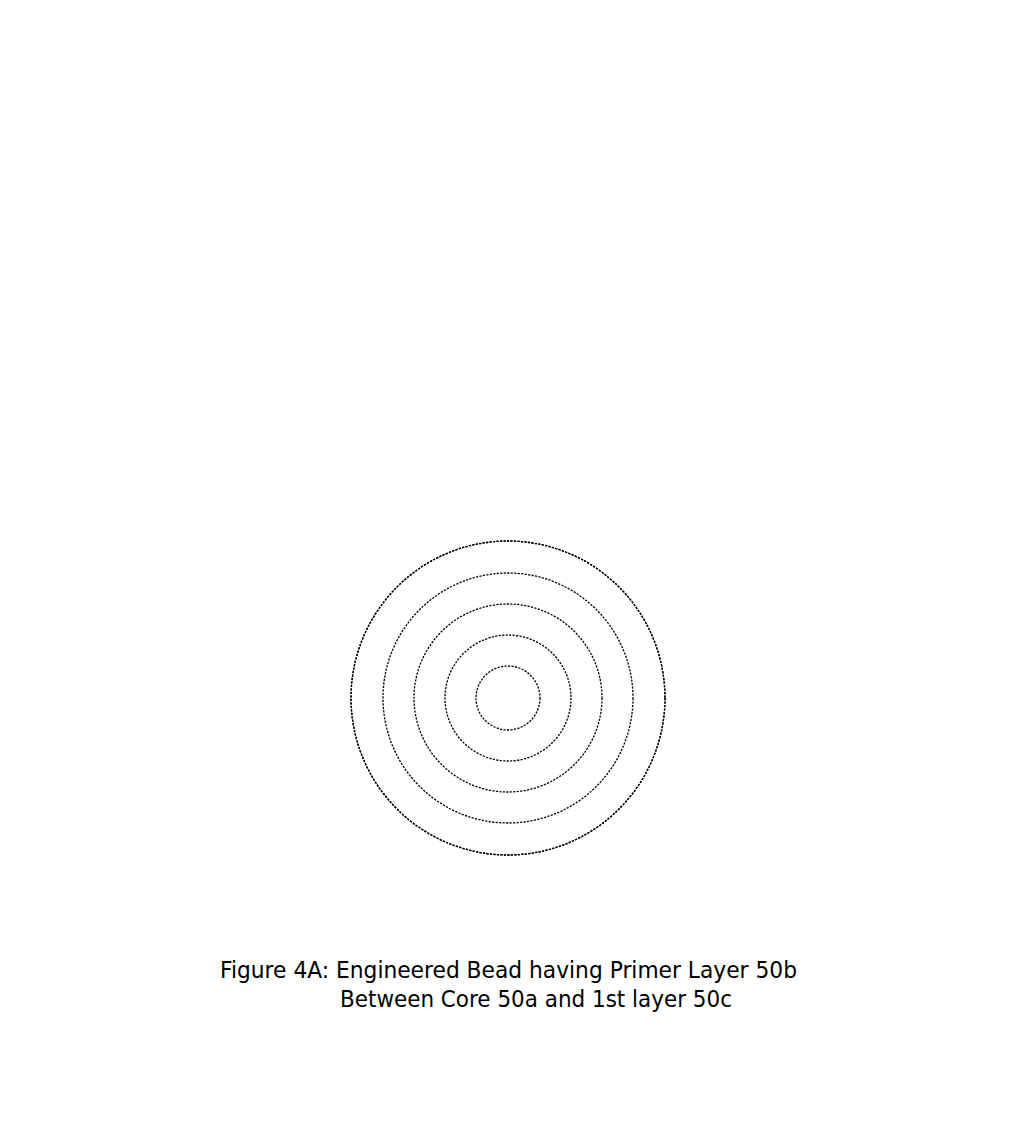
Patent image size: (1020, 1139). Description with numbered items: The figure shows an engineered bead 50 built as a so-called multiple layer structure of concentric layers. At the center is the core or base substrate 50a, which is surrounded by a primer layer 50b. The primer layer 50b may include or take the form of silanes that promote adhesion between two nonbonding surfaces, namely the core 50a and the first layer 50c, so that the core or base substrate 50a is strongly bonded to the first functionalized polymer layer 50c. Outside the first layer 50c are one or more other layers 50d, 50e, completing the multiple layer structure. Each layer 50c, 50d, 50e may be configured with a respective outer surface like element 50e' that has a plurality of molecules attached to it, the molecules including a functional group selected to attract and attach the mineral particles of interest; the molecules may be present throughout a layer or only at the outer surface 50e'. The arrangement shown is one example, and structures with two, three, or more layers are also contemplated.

The engineered bead 50 is at (652, 554).
The core or base substrate 50a is at (507, 700).
The primer layer 50b is at (487, 657).
The first layer 50c is at (487, 624).
The other layer 50d is at (493, 590).
The other layer 50e is at (496, 468).
The outer surface 50e' is at (508, 439).